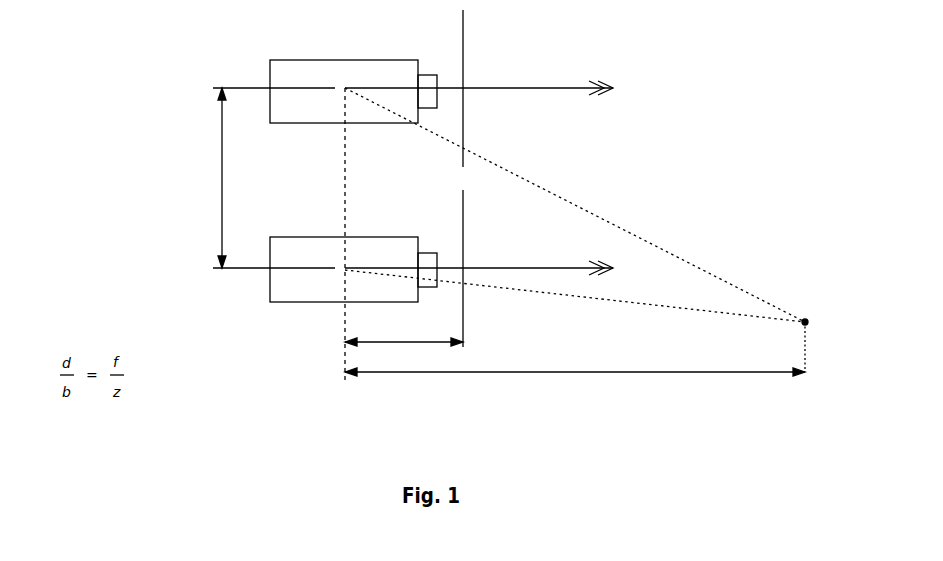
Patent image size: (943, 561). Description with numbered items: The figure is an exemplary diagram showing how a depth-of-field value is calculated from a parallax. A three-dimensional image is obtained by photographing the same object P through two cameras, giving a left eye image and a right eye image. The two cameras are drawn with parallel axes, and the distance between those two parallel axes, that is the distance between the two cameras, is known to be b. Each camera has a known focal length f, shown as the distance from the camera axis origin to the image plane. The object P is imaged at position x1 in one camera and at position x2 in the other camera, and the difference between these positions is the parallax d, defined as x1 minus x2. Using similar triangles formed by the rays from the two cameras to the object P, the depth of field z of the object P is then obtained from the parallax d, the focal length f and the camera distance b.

The image coordinate in first camera x1 is at (413, 109).
The image coordinate in second camera x2 is at (480, 277).
The object P is at (804, 304).
The distance between the two cameras b is at (230, 178).
The focal length f is at (404, 330).
The depth of field z is at (575, 361).
The parallax d is at (653, 158).